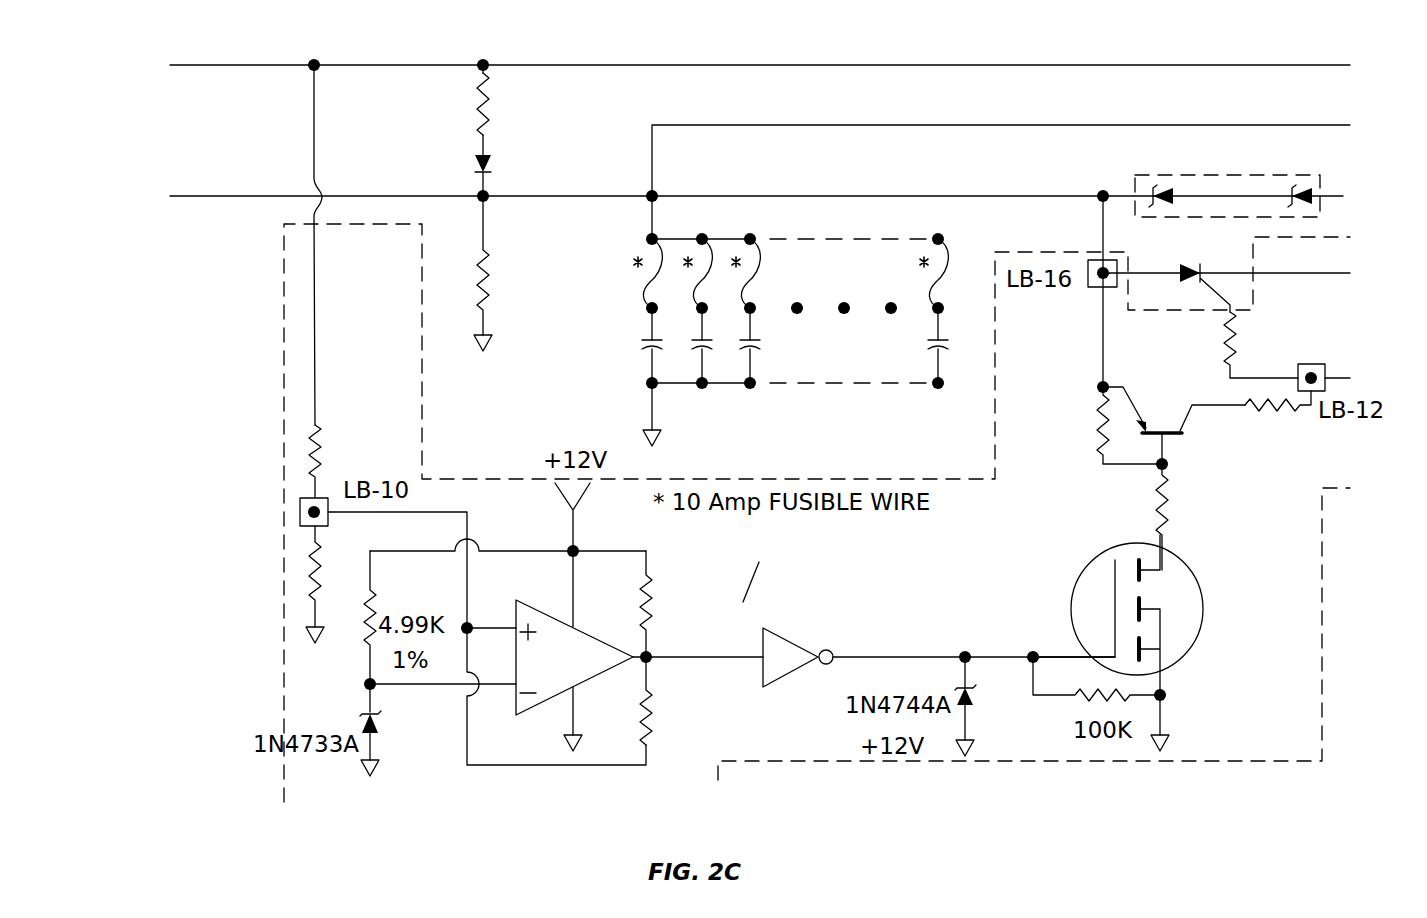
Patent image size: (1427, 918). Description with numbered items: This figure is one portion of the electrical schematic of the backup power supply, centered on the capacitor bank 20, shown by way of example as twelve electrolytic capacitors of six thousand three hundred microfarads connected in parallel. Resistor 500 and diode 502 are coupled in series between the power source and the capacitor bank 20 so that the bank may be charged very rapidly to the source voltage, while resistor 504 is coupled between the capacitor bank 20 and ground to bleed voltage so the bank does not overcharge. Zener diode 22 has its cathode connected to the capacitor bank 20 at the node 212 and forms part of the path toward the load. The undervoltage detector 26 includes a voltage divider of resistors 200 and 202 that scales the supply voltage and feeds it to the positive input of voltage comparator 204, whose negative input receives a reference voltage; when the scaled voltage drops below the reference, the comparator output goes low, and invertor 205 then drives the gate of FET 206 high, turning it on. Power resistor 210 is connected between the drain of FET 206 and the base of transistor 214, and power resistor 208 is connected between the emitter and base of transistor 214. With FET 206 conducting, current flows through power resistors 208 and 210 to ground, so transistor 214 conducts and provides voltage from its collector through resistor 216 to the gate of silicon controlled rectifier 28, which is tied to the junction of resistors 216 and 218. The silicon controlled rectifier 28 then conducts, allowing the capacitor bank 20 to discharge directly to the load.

The capacitor bank 20 is at (946, 238).
The zener diode 22 is at (1338, 183).
The undervoltage detector 26 is at (282, 670).
The silicon controlled rectifier 28 is at (1198, 283).
The resistor 200 is at (318, 442).
The resistor 202 is at (320, 566).
The voltage comparator 204 is at (542, 703).
The invertor 205 is at (801, 640).
The FET 206 is at (1086, 572).
The power resistor 208 is at (1096, 448).
The power resistor 210 is at (1158, 511).
The node 212 is at (1098, 194).
The transistor 214 is at (1168, 441).
The resistor 216 is at (1281, 409).
The resistor 218 is at (1238, 330).
The resistor 500 is at (480, 104).
The diode 502 is at (490, 161).
The resistor 504 is at (480, 281).